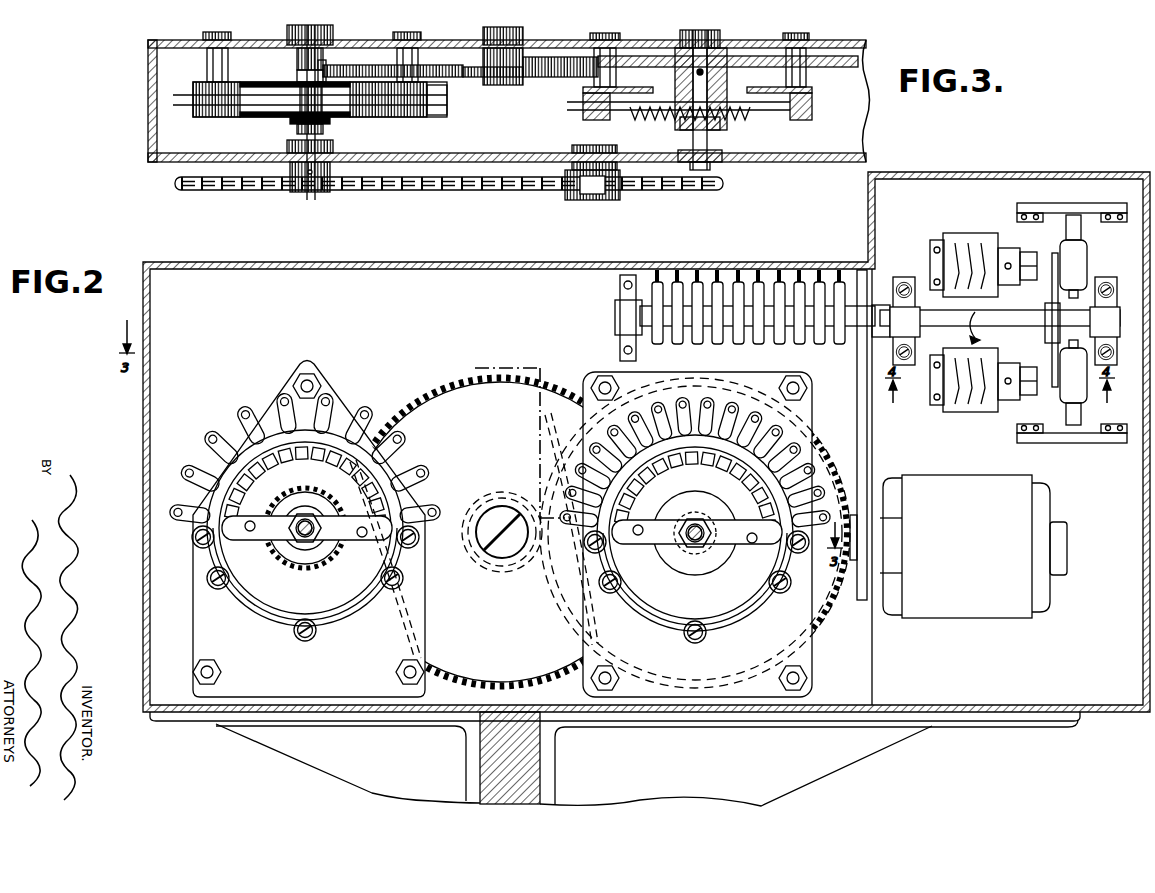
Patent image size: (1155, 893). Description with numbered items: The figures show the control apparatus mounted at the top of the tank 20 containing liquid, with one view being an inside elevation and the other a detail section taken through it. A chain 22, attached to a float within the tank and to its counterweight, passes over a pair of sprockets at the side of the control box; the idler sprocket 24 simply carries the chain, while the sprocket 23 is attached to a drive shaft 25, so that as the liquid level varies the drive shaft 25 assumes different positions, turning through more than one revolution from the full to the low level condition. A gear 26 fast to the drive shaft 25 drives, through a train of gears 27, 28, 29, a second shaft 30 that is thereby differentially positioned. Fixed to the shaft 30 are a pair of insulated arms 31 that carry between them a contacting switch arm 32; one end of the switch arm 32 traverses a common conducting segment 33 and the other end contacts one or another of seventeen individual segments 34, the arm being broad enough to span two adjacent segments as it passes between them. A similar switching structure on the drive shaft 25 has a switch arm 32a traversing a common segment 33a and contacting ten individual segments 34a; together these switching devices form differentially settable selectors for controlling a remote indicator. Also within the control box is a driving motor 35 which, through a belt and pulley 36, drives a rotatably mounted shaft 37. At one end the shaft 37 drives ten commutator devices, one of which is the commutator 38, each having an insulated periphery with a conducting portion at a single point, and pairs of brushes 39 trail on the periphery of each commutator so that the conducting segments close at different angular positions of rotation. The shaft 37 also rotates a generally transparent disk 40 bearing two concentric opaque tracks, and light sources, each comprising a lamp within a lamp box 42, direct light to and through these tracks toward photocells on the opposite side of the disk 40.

In FIG. 2, the tank 20 is at (482, 760).
In FIG. 3, the chain 22 is at (236, 192).
In FIG. 3, the sprocket 23 is at (328, 190).
In FIG. 3, the idler sprocket 24 is at (618, 193).
In FIG. 3, the drive shaft 25 is at (318, 130).
In FIG. 2, the drive shaft 25 is at (300, 540).
In FIG. 3, the gear 26 is at (346, 65).
In FIG. 2, the gear 26 is at (322, 508).
In FIG. 3, the gear 27 is at (455, 80).
In FIG. 2, the gear 27 is at (430, 420).
In FIG. 3, the gear 28 is at (538, 56).
In FIG. 2, the gear 28 is at (497, 500).
In FIG. 3, the gear 29 is at (628, 57).
In FIG. 2, the gear 29 is at (845, 600).
In FIG. 3, the second shaft 30 is at (708, 133).
In FIG. 2, the second shaft 30 is at (700, 560).
In FIG. 3, the insulated arms 31 is at (656, 121).
In FIG. 2, the insulated arms 31 is at (735, 530).
In FIG. 3, the switch arm 32 is at (618, 118).
In FIG. 2, the switch arm 32 is at (760, 590).
In FIG. 3, the common conducting segment 33 is at (812, 107).
In FIG. 2, the common conducting segment 33 is at (665, 605).
In FIG. 3, the individual segments 34 is at (570, 110).
In FIG. 2, the individual segments 34 is at (730, 412).
In FIG. 2, the individual segments 34a is at (305, 456).
In FIG. 2, the switch arm 32a is at (215, 562).
In FIG. 2, the common segment 33a is at (272, 600).
In FIG. 2, the driving motor 35 is at (955, 585).
In FIG. 2, the belt and pulley 36 is at (867, 445).
In FIG. 2, the shaft 37 is at (1012, 318).
In FIG. 2, the commutator device 38 is at (1052, 268).
In FIG. 2, the brushes 39 is at (836, 268).
In FIG. 2, the disk 40 is at (1075, 268).
In FIG. 2, the lamp box 42 is at (960, 250).